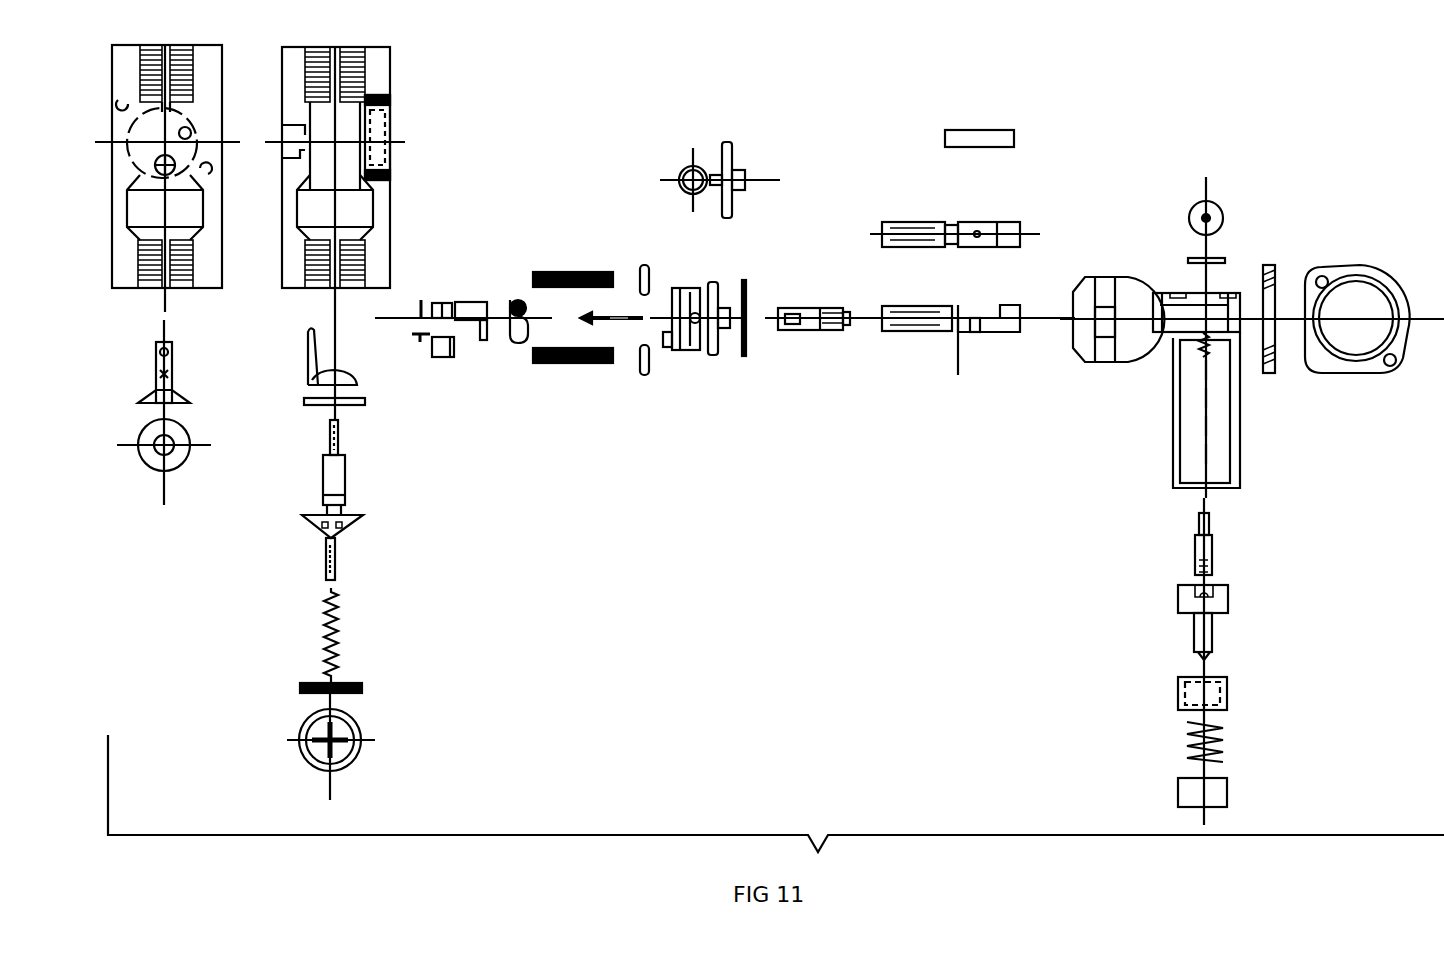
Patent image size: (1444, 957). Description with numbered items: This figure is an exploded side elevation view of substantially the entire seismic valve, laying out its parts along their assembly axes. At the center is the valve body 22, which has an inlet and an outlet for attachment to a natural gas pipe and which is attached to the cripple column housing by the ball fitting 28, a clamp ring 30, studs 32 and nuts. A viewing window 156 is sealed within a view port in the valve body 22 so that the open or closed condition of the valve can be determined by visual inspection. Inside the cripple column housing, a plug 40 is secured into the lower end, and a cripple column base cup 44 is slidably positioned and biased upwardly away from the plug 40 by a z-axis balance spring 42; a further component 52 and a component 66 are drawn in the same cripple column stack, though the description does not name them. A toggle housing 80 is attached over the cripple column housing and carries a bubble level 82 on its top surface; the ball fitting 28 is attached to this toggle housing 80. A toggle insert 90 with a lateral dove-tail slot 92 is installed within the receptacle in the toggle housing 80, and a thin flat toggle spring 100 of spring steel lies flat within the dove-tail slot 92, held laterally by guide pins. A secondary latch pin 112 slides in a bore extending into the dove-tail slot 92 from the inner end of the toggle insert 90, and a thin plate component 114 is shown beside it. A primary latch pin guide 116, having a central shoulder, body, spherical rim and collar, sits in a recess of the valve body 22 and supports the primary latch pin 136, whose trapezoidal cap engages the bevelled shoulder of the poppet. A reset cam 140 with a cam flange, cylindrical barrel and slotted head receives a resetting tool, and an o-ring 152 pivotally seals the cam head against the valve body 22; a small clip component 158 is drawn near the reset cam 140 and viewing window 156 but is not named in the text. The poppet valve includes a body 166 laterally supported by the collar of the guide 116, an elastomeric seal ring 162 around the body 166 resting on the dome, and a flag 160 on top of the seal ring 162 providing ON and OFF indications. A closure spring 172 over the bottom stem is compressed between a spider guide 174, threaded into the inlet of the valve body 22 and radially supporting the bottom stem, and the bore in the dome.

The valve body 22 is at (390, 63).
The ball fitting 28 is at (1112, 277).
The clamp ring 30 is at (1270, 265).
The studs 32 is at (578, 272).
The plug 40 is at (1228, 792).
The z-axis balance spring 42 is at (1192, 750).
The cripple column base cup 44 is at (1228, 692).
The valve body 52 is at (1228, 607).
The pin 66 is at (1212, 565).
The toggle housing 80 is at (1232, 292).
The bubble level 82 is at (1190, 258).
The toggle insert 90 is at (905, 332).
The dove-tail slot 92 is at (975, 222).
The toggle spring 100 is at (965, 128).
The secondary latch pin 112 is at (805, 308).
The disk 114 is at (748, 282).
The primary latch pin guide 116 is at (728, 142).
The primary latch pin 136 is at (625, 322).
The reset cam 140 is at (509, 303).
The o-ring 152 is at (421, 313).
The viewing window 156 is at (440, 358).
The clip 158 is at (418, 342).
The flag 160 is at (175, 392).
The elastomeric seal ring 162 is at (357, 405).
The body 166 is at (347, 525).
The closure spring 172 is at (338, 610).
The spider guide 174 is at (362, 688).